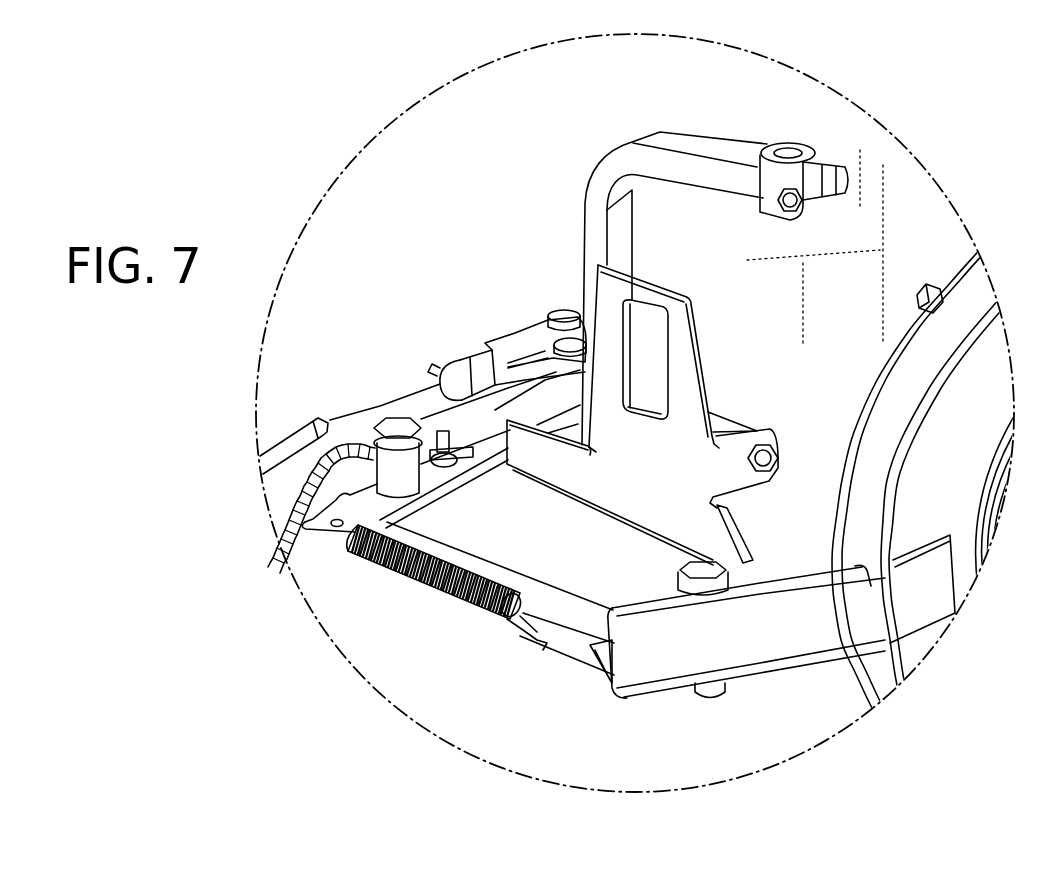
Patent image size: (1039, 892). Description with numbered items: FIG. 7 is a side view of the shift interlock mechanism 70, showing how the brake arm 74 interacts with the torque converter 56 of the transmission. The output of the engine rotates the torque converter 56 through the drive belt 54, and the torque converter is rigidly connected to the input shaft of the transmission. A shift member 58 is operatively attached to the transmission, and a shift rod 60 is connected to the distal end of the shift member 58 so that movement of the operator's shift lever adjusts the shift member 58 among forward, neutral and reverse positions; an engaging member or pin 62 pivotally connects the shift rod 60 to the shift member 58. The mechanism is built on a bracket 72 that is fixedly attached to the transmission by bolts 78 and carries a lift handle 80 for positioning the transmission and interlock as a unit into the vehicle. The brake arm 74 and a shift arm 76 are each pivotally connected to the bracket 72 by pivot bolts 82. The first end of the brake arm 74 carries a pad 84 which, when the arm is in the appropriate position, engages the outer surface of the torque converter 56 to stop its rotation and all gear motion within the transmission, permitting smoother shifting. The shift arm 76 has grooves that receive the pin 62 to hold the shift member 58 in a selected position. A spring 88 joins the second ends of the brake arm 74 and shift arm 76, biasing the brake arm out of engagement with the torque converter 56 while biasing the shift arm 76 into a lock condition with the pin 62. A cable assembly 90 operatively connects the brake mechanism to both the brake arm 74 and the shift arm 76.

The drive belt 54 is at (963, 340).
The torque converter 56 is at (967, 437).
The shift member 58 is at (650, 130).
The shift rod 60 is at (545, 310).
The engaging member or pin 62 is at (553, 310).
The shift interlock mechanism 70 is at (461, 262).
The bracket 72 is at (567, 570).
The brake arm 74 is at (808, 668).
The shift arm 76 is at (433, 375).
The bolts 78 is at (777, 453).
The lift handle 80 is at (597, 267).
The pivot bolts 82 is at (437, 463).
The pad 84 is at (955, 613).
The spring 88 is at (430, 586).
The cable assembly 90 is at (292, 481).